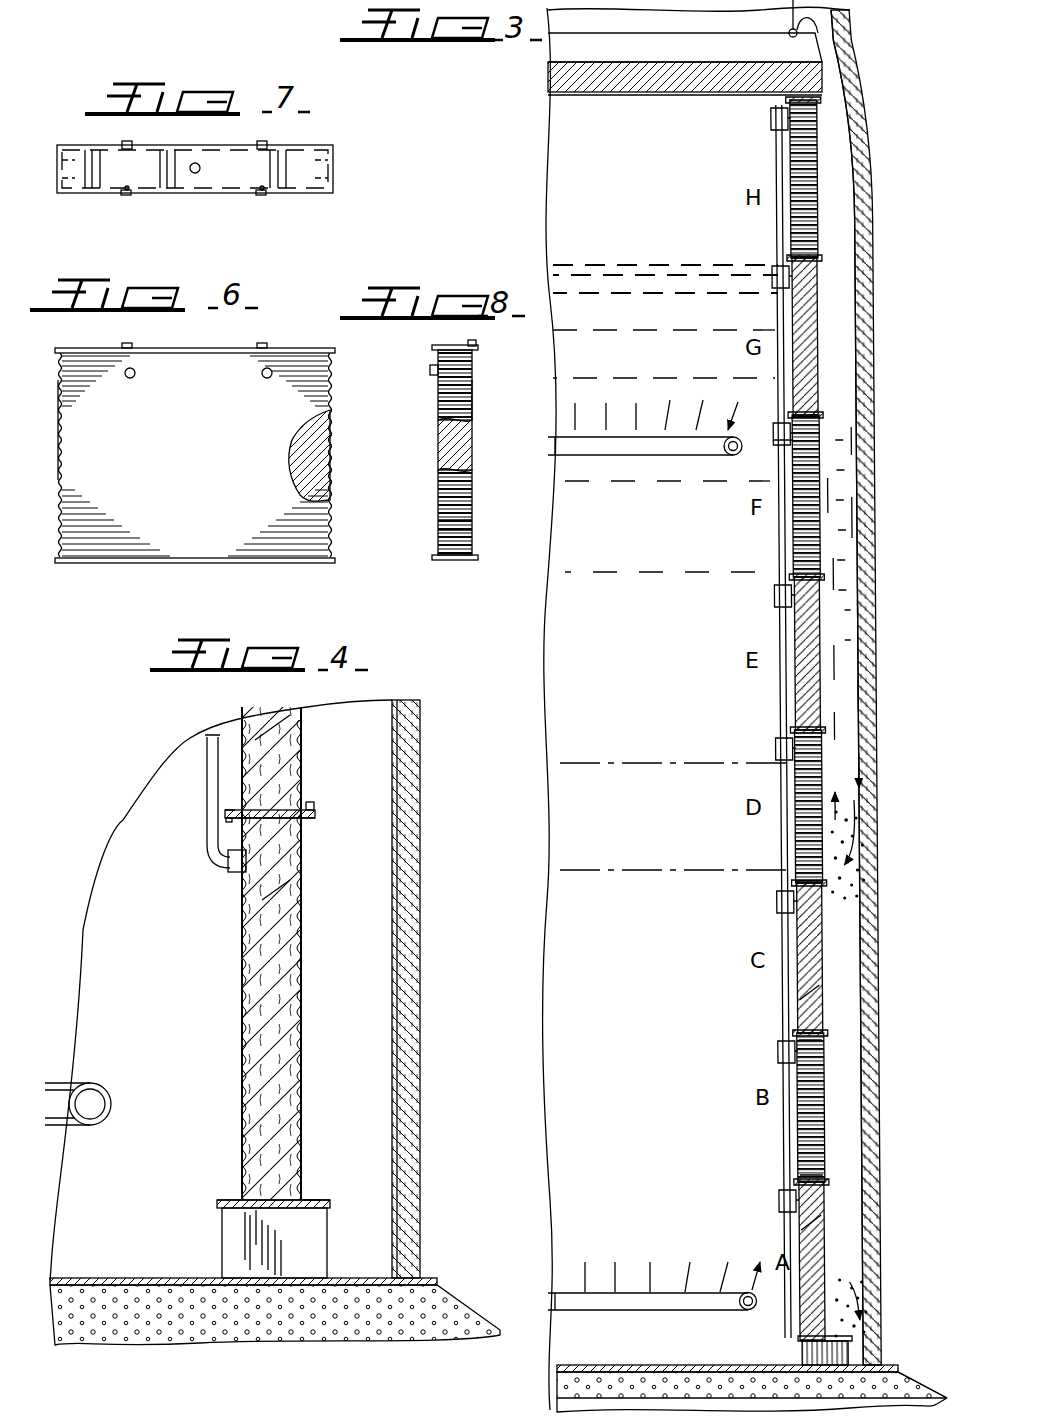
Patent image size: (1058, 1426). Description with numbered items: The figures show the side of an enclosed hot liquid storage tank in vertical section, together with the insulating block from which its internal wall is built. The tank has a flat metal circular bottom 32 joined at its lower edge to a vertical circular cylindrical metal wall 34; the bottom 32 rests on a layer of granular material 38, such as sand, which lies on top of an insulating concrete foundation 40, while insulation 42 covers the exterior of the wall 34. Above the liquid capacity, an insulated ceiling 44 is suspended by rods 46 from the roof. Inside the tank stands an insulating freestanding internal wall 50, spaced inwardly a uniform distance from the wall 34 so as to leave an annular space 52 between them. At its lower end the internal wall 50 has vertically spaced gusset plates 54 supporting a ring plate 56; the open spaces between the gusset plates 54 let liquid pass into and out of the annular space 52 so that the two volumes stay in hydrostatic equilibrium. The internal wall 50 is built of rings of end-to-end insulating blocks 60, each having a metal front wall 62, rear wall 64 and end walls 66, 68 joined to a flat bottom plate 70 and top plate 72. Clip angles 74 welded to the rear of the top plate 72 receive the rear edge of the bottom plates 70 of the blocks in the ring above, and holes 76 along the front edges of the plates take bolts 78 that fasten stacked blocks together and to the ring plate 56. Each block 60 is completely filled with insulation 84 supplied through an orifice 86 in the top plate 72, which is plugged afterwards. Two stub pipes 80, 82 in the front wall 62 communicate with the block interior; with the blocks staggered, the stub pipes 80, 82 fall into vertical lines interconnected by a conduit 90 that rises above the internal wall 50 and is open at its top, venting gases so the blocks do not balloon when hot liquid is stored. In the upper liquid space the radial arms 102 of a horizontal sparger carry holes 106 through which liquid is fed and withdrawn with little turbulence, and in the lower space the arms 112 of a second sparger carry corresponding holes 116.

In FIG. 3, the bottom 32 is at (583, 1368).
In FIG. 4, the bottom 32 is at (88, 1280).
In FIG. 3, the wall 34 is at (852, 268).
In FIG. 4, the wall 34 is at (396, 790).
In FIG. 3, the granular material 38 is at (570, 1384).
In FIG. 4, the granular material 38 is at (178, 1318).
In FIG. 3, the insulating concrete foundation 40 is at (932, 1405).
In FIG. 3, the insulation 42 is at (870, 352).
In FIG. 4, the insulation 42 is at (412, 835).
In FIG. 3, the insulated ceiling 44 is at (574, 57).
In FIG. 3, the rods 46 is at (795, 30).
In FIG. 3, the internal wall 50 is at (804, 718).
In FIG. 4, the internal wall 50 is at (303, 944).
In FIG. 3, the annular space 52 is at (835, 940).
In FIG. 4, the annular space 52 is at (332, 1055).
In FIG. 3, the gusset plates 54 is at (810, 1352).
In FIG. 4, the gusset plates 54 is at (240, 1238).
In FIG. 4, the ring plate 56 is at (225, 1204).
In FIG. 3, the insulating block 60 is at (824, 180).
In FIG. 4, the insulating block 60 is at (308, 935).
In FIG. 7, the insulating block 60 is at (238, 152).
In FIG. 6, the insulating block 60 is at (206, 452).
In FIG. 8, the insulating block 60 is at (448, 461).
In FIG. 4, the front wall 62 is at (240, 995).
In FIG. 6, the front wall 62 is at (198, 462).
In FIG. 8, the front wall 62 is at (440, 412).
In FIG. 4, the rear wall 64 is at (304, 982).
In FIG. 8, the rear wall 64 is at (474, 396).
In FIG. 6, the end wall 66 is at (60, 435).
In FIG. 3, the end wall 68 is at (808, 1135).
In FIG. 8, the end wall 68 is at (458, 528).
In FIG. 4, the bottom plate 70 is at (268, 815).
In FIG. 6, the bottom plate 70 is at (245, 563).
In FIG. 8, the bottom plate 70 is at (443, 560).
In FIG. 3, the top plate 72 is at (772, 694).
In FIG. 4, the top plate 72 is at (272, 820).
In FIG. 7, the top plate 72 is at (325, 168).
In FIG. 6, the top plate 72 is at (182, 348).
In FIG. 8, the top plate 72 is at (440, 345).
In FIG. 4, the clip angles 74 is at (312, 806).
In FIG. 7, the clip angles 74 is at (122, 143).
In FIG. 6, the clip angles 74 is at (128, 343).
In FIG. 8, the clip angles 74 is at (475, 342).
In FIG. 7, the holes 76 is at (126, 196).
In FIG. 4, the bolts 78 is at (226, 806).
In FIG. 3, the stub pipe 80 is at (788, 448).
In FIG. 6, the stub pipe 80 is at (130, 378).
In FIG. 3, the stub pipe 82 is at (782, 605).
In FIG. 4, the stub pipe 82 is at (238, 874).
In FIG. 6, the stub pipe 82 is at (265, 378).
In FIG. 8, the stub pipe 82 is at (430, 372).
In FIG. 3, the insulation 84 is at (810, 1012).
In FIG. 4, the insulation 84 is at (263, 735).
In FIG. 6, the insulation 84 is at (318, 470).
In FIG. 8, the insulation 84 is at (468, 455).
In FIG. 7, the orifice 86 is at (195, 174).
In FIG. 3, the conduit 90 is at (785, 940).
In FIG. 4, the conduit 90 is at (205, 765).
In FIG. 3, the radial arms 102 is at (666, 446).
In FIG. 3, the holes 106 is at (636, 432).
In FIG. 3, the arms 112 is at (658, 1305).
In FIG. 4, the arms 112 is at (60, 1128).
In FIG. 3, the holes 116 is at (622, 1290).